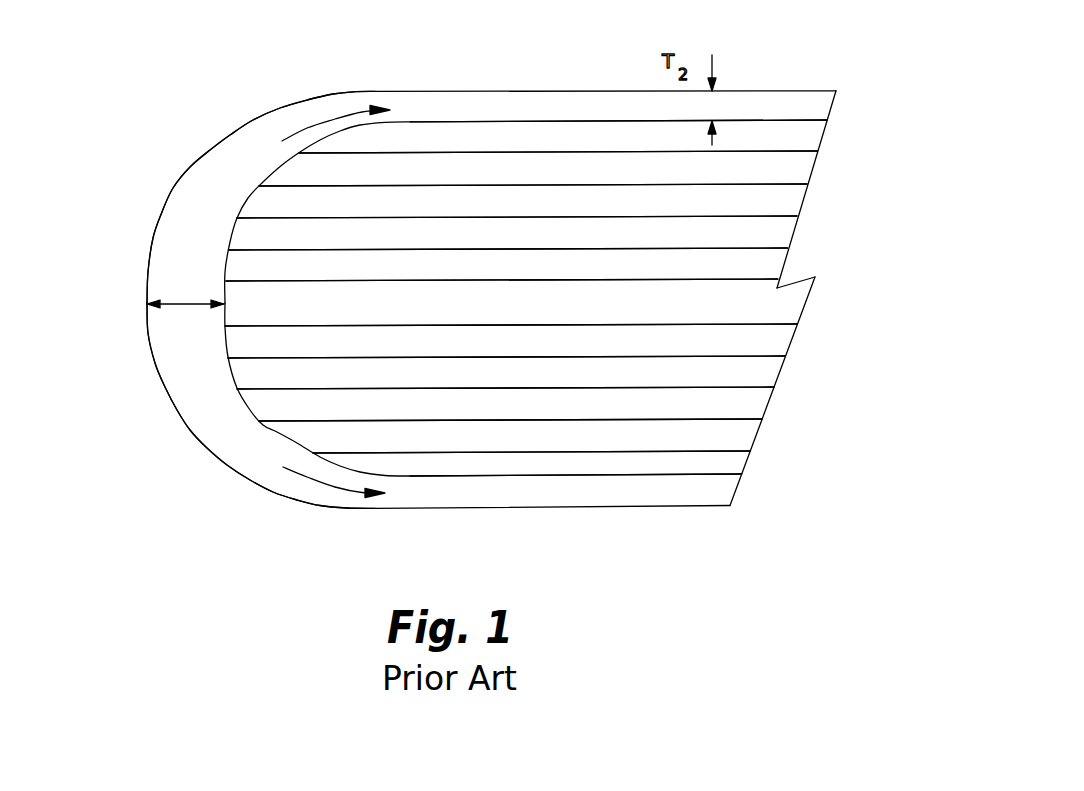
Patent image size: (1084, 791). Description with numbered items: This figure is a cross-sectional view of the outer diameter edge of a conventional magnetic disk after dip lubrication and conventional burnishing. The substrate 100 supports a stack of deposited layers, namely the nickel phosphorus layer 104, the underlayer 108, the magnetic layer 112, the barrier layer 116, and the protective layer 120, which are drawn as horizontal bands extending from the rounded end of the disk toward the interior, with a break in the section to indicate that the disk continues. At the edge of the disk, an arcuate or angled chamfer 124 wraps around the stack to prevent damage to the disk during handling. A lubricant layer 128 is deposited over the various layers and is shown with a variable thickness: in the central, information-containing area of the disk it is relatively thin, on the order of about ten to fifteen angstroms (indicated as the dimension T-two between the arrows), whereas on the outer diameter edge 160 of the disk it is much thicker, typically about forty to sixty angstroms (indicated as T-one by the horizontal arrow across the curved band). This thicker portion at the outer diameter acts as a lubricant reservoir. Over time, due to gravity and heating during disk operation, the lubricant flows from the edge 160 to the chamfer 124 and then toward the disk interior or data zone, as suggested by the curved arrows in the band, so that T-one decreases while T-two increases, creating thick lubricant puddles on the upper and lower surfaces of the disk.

The substrate 100 is at (804, 307).
The nickel phosphorus layer 104 is at (785, 260).
The underlayer 108 is at (794, 230).
The magnetic layer 112 is at (803, 200).
The barrier layer 116 is at (814, 167).
The protective layer 120 is at (823, 137).
The chamfer 124 is at (266, 183).
The lubricant layer 128 is at (797, 107).
The outer diameter edge 160 is at (225, 327).